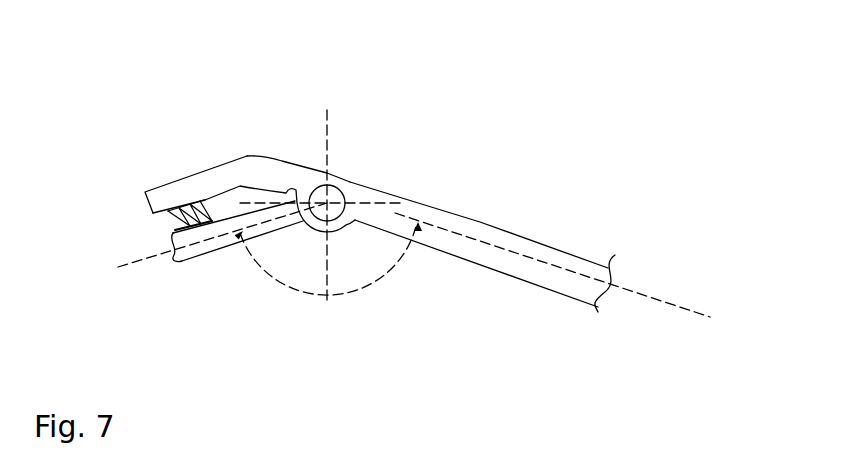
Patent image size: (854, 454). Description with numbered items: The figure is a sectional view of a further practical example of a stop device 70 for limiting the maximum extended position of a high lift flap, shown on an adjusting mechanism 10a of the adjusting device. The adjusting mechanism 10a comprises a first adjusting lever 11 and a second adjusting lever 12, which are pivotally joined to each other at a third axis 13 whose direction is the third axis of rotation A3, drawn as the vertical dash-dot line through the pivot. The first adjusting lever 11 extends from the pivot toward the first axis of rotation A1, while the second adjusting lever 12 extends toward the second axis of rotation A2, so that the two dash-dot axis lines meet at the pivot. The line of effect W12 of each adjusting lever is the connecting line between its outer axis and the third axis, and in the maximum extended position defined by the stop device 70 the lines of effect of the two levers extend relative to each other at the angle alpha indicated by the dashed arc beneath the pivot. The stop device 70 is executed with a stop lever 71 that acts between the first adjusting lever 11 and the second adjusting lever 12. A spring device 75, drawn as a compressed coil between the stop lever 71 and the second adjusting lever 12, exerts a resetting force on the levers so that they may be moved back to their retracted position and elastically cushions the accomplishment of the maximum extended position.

The adjusting mechanism 10a is at (268, 92).
The stop device 70 is at (428, 123).
The stop lever 71 is at (190, 186).
The spring device 75 is at (172, 222).
The second adjusting lever 12 is at (210, 250).
The third axis 13 is at (332, 217).
The first adjusting lever 11 is at (541, 272).
The third axis of rotation A3 is at (358, 157).
The line of effect W12 is at (518, 258).
The first axis of rotation A1 is at (573, 276).
The second axis of rotation A2 is at (187, 248).